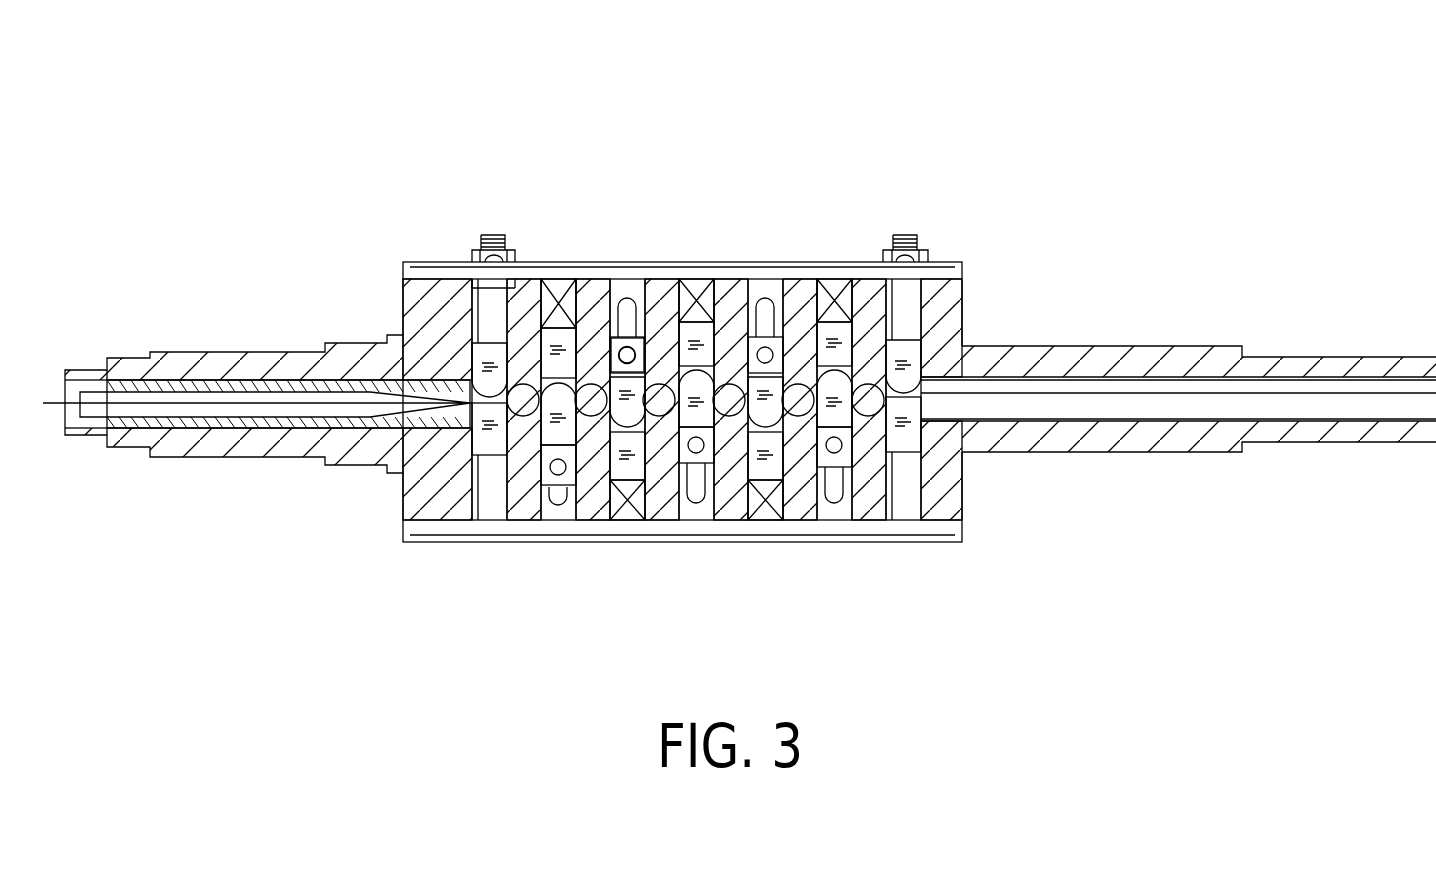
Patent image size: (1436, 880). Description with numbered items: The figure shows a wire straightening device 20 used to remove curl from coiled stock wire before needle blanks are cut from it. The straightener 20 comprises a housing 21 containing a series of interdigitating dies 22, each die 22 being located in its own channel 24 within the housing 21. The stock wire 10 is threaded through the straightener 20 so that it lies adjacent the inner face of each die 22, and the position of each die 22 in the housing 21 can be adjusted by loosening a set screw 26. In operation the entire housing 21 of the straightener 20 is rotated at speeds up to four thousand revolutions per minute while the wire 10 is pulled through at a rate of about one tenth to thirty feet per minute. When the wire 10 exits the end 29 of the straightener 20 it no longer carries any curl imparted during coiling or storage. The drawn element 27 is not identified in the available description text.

The wire straightening device 20 is at (801, 138).
The housing 21 is at (923, 542).
The interdigitating dies 22 is at (483, 382).
The channel 24 is at (628, 338).
The set screw 26 is at (636, 355).
The input fiber connector 27 is at (88, 370).
The end 29 is at (1418, 357).
The stock wire 10 is at (45, 415).